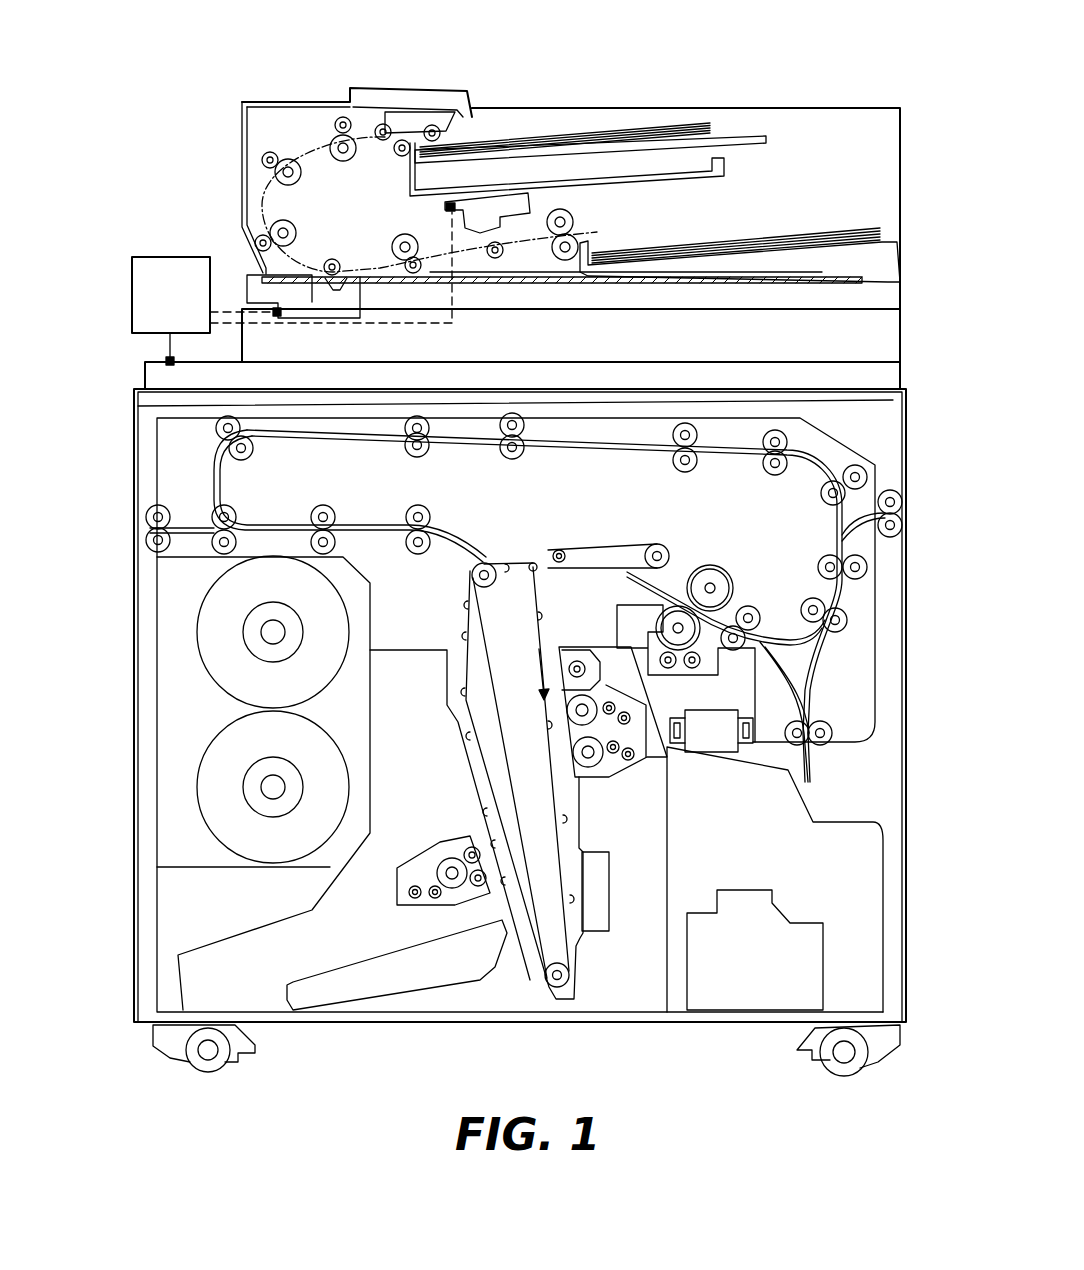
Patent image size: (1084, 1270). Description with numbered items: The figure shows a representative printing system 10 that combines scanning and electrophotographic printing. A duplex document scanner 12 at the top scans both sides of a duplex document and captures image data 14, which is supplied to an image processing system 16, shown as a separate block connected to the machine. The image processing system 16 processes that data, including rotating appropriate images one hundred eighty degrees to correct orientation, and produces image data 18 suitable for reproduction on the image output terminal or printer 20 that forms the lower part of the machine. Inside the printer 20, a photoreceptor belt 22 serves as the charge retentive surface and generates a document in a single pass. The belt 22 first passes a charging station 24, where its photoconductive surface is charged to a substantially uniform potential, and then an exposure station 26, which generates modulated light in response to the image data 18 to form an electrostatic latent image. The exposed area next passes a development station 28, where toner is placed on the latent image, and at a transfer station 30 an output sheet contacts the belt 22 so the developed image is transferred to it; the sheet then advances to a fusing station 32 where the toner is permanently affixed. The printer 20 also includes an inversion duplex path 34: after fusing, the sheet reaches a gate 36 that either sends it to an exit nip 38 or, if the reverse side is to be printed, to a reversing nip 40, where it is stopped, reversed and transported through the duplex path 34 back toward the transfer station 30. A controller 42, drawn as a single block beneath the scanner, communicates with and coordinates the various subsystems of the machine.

The printing system 10 is at (258, 58).
The duplex document scanner 12 is at (722, 106).
The image data 14 is at (268, 313).
The image processing system 16 is at (184, 307).
The image data 18 is at (165, 355).
The image output terminal 20 is at (137, 698).
The photoreceptor belt 22 is at (468, 628).
The charging station 24 is at (609, 893).
The exposure station 26 is at (426, 981).
The development station 28 is at (447, 840).
The transfer station 30 is at (502, 559).
The fusing station 32 is at (742, 576).
The inversion duplex path 34 is at (645, 449).
The gate 36 is at (805, 667).
The exit nip 38 is at (903, 513).
The reversing nip 40 is at (830, 736).
The controller 42 is at (148, 371).